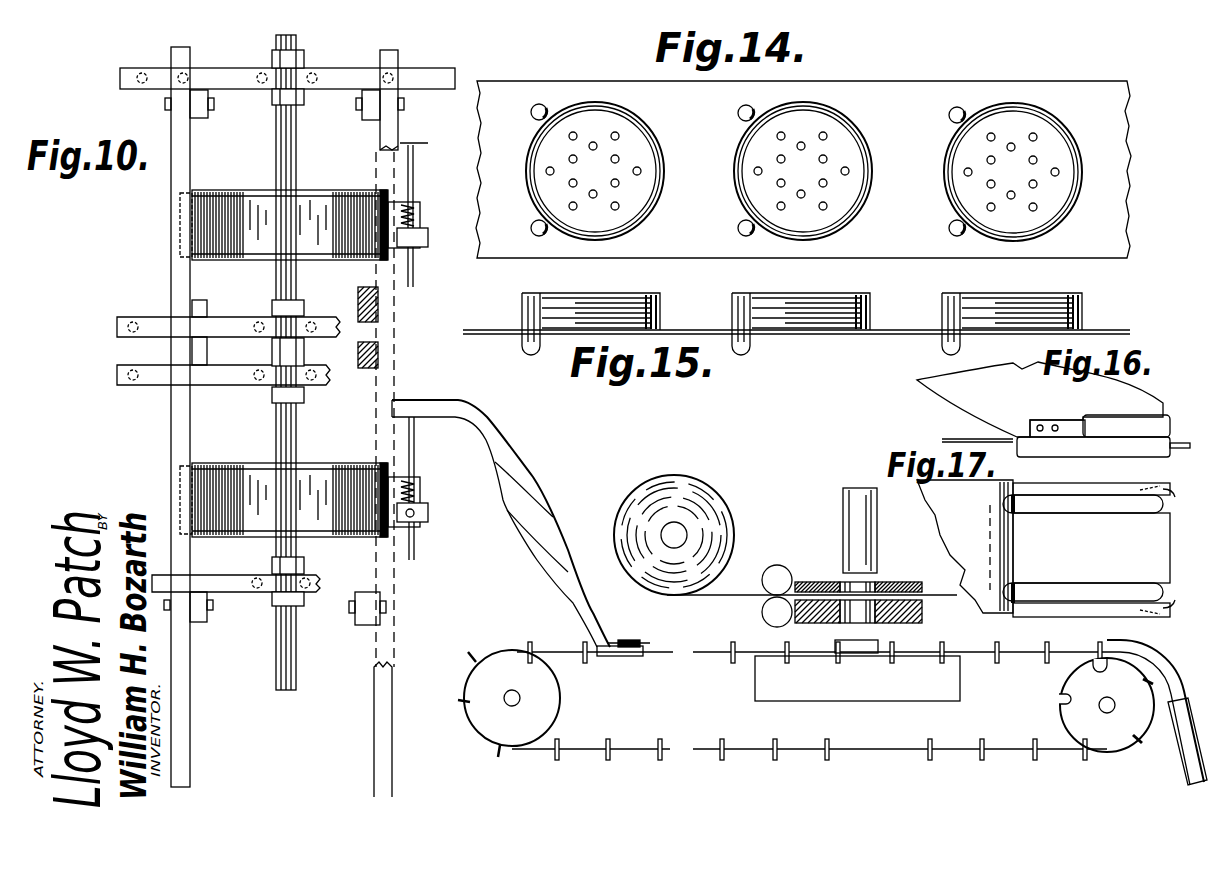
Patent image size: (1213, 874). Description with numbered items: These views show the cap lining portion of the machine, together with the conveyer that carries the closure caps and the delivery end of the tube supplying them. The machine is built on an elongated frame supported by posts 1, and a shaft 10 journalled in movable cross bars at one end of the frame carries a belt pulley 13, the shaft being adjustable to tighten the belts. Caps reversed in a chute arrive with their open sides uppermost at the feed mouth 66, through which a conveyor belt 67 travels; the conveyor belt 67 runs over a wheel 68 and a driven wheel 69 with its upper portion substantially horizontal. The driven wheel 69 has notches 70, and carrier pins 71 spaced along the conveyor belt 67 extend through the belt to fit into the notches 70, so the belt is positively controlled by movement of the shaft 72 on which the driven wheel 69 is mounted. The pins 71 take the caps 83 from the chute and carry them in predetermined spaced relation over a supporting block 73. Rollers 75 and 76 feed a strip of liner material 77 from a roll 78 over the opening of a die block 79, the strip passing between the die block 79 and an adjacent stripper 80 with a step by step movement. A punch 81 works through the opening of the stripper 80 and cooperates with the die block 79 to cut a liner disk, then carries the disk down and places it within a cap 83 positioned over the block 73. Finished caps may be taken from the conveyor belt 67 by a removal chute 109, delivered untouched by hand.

In FIG. 10, the posts 1 is at (433, 82).
In FIG. 10, the shaft 10 is at (277, 166).
In FIG. 10, the belt pulley 13 is at (340, 198).
In FIG. 10, the feed mouth 66 is at (604, 640).
In FIG. 10, the conveyor belt 67 is at (721, 655).
In FIG. 14, the conveyor belt 67 is at (931, 82).
In FIG. 15, the conveyor belt 67 is at (885, 337).
In FIG. 10, the wheel 68 is at (471, 719).
In FIG. 10, the driven wheel 69 is at (1108, 752).
In FIG. 10, the notches 70 is at (1058, 697).
In FIG. 10, the carrier pins 71 is at (998, 660).
In FIG. 14, the carrier pins 71 is at (531, 231).
In FIG. 15, the carrier pins 71 is at (732, 316).
In FIG. 10, the shaft 72 is at (1100, 710).
In FIG. 10, the supporting block 73 is at (900, 702).
In FIG. 10, the roller 75 is at (782, 566).
In FIG. 10, the roller 76 is at (762, 614).
In FIG. 10, the strip of liner material 77 is at (727, 594).
In FIG. 10, the roll 78 is at (680, 488).
In FIG. 10, the die block 79 is at (923, 611).
In FIG. 10, the stripper 80 is at (896, 582).
In FIG. 10, the punch 81 is at (843, 510).
In FIG. 10, the caps 83 is at (839, 640).
In FIG. 14, the caps 83 is at (664, 178).
In FIG. 15, the caps 83 is at (1027, 298).
In FIG. 10, the cap or article removal chute 109 is at (1185, 765).